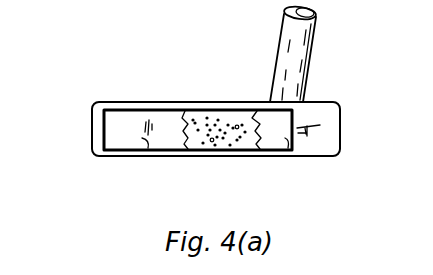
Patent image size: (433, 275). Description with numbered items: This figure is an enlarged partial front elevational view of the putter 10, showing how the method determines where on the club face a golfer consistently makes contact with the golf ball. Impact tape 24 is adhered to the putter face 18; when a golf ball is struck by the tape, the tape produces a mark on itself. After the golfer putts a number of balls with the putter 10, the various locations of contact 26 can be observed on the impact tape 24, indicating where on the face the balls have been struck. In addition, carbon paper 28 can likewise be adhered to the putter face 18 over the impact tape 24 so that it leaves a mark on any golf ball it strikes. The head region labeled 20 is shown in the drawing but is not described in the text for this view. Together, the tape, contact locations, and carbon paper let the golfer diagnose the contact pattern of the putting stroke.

The putter 10 is at (323, 73).
The putter face 18 is at (317, 150).
The housing 20 is at (92, 131).
The impact tape 24 is at (205, 145).
The locations of contact 26 is at (208, 115).
The carbon paper 28 is at (142, 140).